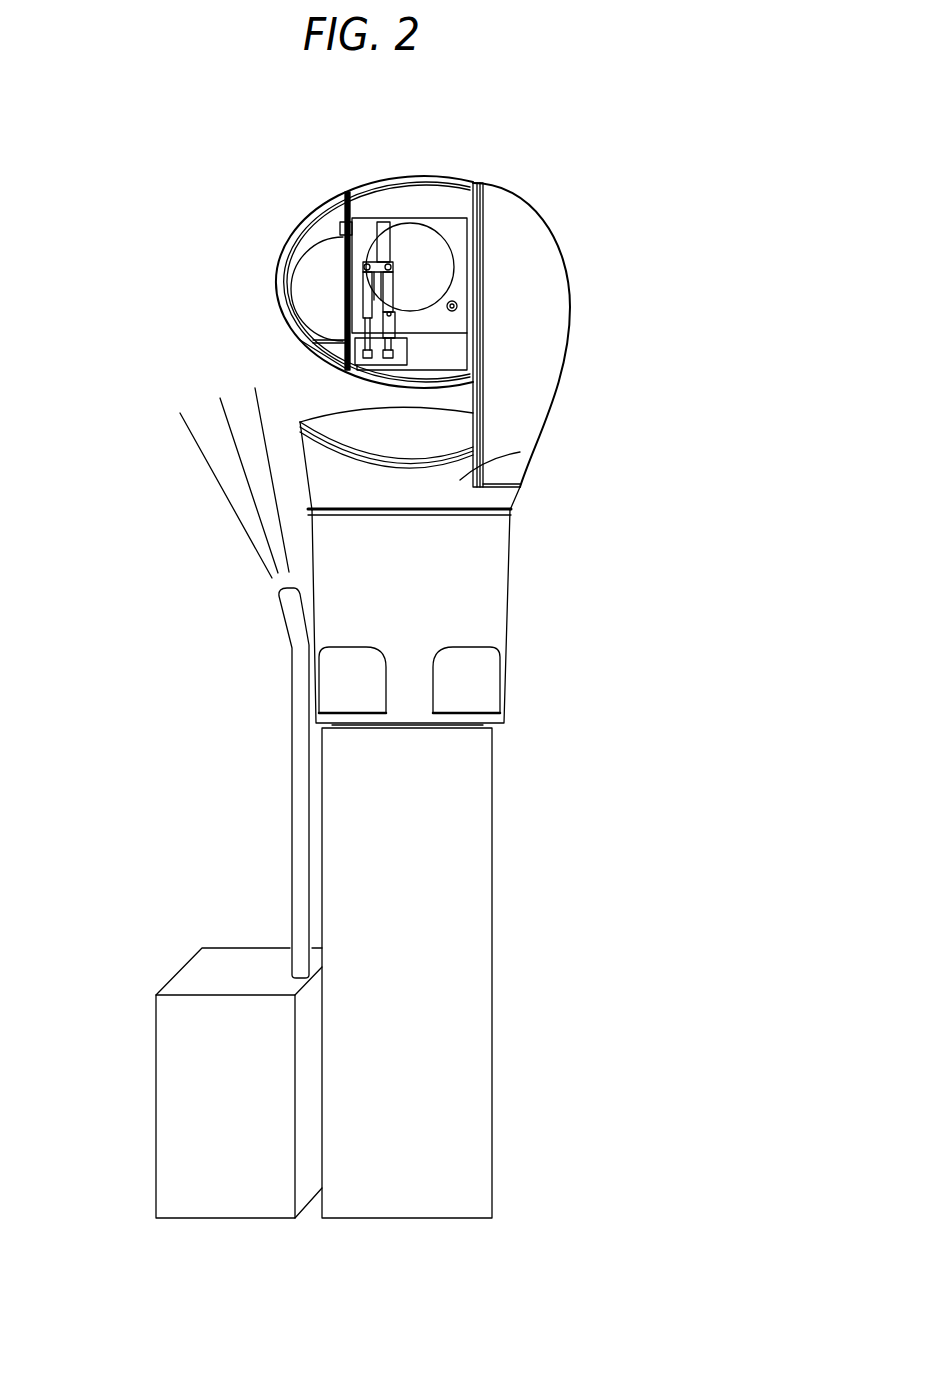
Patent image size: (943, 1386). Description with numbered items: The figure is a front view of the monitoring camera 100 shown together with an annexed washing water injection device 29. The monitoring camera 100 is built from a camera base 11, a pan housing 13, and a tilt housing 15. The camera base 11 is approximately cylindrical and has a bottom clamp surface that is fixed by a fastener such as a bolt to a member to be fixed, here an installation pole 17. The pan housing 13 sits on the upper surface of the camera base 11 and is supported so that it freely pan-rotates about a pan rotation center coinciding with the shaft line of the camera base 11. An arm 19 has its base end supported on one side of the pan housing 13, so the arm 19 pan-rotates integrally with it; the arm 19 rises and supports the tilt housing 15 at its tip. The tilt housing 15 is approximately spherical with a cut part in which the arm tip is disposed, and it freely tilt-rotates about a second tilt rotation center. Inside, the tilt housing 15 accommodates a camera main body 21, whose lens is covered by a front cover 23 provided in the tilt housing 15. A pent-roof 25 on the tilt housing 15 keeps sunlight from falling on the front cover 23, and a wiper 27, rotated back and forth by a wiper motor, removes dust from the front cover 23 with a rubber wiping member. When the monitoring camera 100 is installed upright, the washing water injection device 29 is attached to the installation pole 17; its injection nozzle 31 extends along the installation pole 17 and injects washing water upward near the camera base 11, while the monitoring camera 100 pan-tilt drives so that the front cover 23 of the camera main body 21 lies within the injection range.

The monitoring camera 100 is at (581, 154).
The camera base 11 is at (507, 592).
The pan housing 13 is at (460, 478).
The tilt housing 15 is at (373, 177).
The installation pole 17 is at (492, 957).
The arm 19 is at (568, 323).
The camera main body 21 is at (438, 220).
The front cover 23 is at (440, 268).
The pent-roof 25 is at (358, 216).
The wiper 27 is at (384, 220).
The washing water injection device 29 is at (156, 1112).
The injection nozzle 31 is at (283, 618).